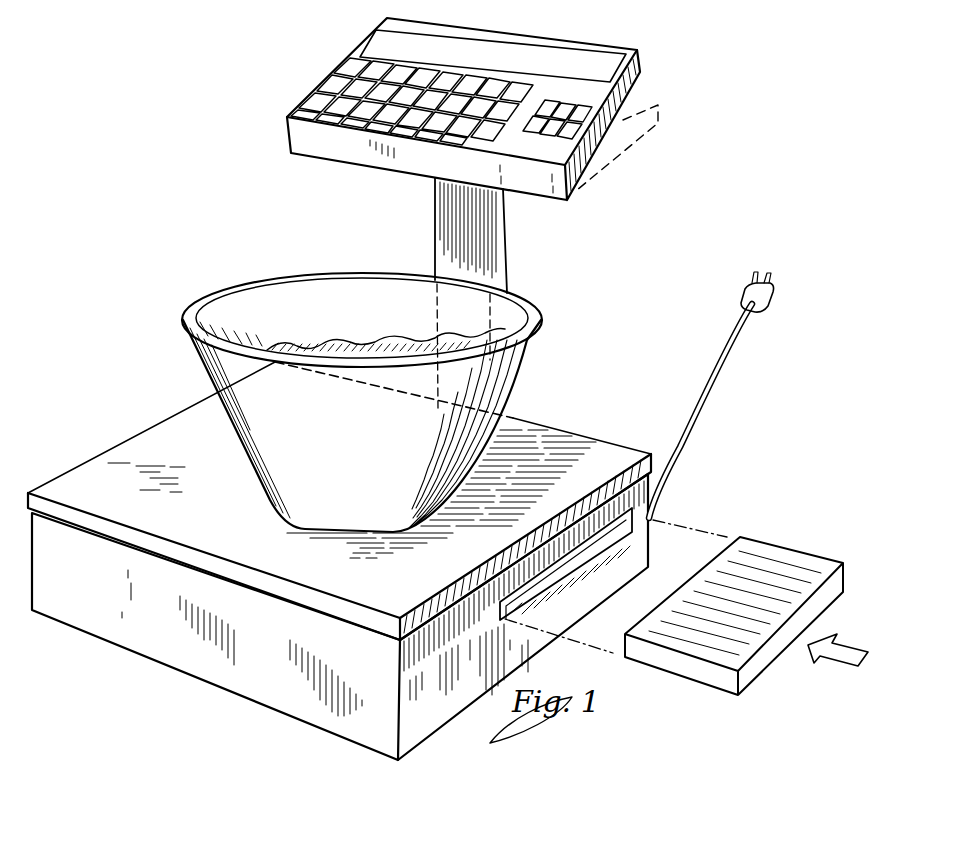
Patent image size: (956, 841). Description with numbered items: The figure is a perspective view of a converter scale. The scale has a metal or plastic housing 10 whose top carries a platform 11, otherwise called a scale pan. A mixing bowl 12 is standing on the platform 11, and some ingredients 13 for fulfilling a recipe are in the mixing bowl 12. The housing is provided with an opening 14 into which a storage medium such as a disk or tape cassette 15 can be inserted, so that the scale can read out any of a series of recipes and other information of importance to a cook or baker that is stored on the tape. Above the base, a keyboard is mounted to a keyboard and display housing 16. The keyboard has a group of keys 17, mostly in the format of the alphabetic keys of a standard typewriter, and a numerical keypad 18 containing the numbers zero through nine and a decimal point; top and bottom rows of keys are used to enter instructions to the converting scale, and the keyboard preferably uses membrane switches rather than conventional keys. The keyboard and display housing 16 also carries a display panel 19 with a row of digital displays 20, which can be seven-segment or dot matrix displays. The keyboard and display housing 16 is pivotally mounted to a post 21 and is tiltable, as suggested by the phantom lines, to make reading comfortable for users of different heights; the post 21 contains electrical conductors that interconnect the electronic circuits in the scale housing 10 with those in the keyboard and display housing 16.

The housing 10 is at (170, 648).
The platform 11 is at (550, 440).
The mixing bowl 12 is at (202, 370).
The ingredients 13 is at (288, 340).
The opening 14 is at (603, 543).
The tape cassette 15 is at (777, 553).
The keyboard and display housing 16 is at (448, 102).
The keys 17 is at (337, 73).
The numerical keypad 18 is at (565, 138).
The display panel 19 is at (608, 60).
The digital displays 20 is at (543, 60).
The post 21 is at (496, 233).